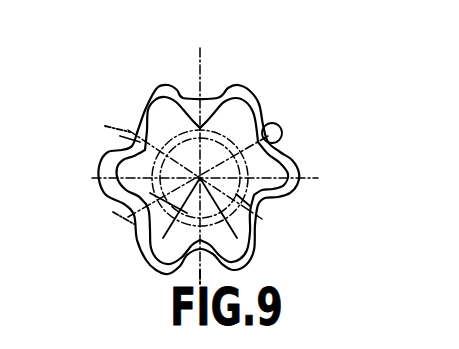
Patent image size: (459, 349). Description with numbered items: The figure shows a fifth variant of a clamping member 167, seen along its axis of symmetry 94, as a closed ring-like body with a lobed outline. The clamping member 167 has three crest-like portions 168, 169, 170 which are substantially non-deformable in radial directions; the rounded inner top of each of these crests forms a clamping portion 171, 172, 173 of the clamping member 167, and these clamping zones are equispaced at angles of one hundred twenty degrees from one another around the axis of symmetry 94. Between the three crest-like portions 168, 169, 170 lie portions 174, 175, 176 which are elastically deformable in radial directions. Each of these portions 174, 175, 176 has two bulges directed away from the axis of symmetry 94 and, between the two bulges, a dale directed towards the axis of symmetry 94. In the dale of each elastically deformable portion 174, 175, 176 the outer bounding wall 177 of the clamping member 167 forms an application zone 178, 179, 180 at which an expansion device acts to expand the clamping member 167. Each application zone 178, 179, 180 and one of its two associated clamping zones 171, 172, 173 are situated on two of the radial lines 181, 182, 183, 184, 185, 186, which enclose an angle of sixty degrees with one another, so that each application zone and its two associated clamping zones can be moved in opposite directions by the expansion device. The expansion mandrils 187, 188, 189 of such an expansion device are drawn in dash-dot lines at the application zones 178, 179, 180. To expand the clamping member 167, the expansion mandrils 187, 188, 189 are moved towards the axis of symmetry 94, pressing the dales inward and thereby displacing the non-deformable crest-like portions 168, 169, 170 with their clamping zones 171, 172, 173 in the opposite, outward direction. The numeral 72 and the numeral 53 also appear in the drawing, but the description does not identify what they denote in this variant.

The clamping member 167 is at (302, 90).
The inner wall 72 is at (180, 124).
The spoke 53 is at (177, 216).
The axis of symmetry 94 is at (222, 216).
The radial line 184 is at (200, 80).
The crest-like portion 170 is at (196, 108).
The clamping portion 173 is at (220, 120).
The outer bounding wall 177 is at (251, 107).
The application zone 180 is at (275, 128).
The radial line 185 is at (291, 124).
The expansion mandril 189 is at (283, 134).
The elastically deformable portion 176 is at (294, 159).
The crest-like portion 168 is at (278, 219).
The radial line 186 is at (282, 217).
The clamping portion 171 is at (258, 230).
The radial line 181 is at (205, 277).
The expansion mandril 187 is at (198, 260).
The application zone 178 is at (194, 247).
The elastically deformable portion 174 is at (150, 272).
The crest-like portion 169 is at (137, 228).
The radial line 182 is at (117, 224).
The clamping portion 172 is at (104, 190).
The elastically deformable portion 175 is at (110, 153).
The application zone 179 is at (138, 146).
The radial line 183 is at (105, 121).
The expansion mandril 188 is at (124, 130).